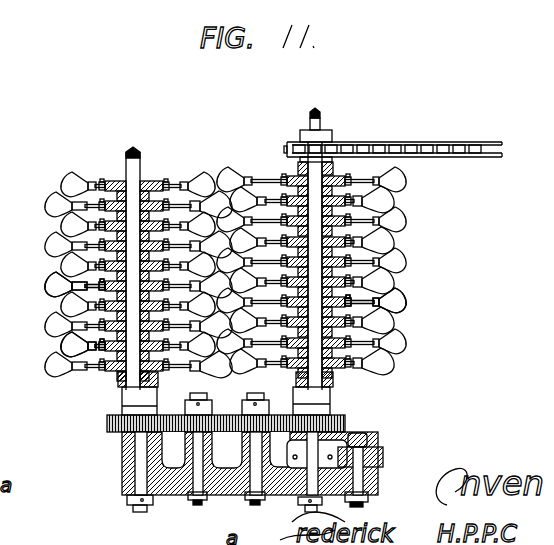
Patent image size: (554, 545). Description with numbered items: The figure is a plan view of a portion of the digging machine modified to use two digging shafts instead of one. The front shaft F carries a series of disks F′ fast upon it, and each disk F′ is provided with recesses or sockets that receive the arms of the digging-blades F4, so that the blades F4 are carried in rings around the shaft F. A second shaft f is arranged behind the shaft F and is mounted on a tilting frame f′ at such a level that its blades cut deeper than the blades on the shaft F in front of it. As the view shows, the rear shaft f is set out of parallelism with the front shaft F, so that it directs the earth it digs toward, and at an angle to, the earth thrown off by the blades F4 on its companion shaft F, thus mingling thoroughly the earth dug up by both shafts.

The second shaft f is at (139, 168).
The shaft F is at (318, 127).
The digging-blade F4 is at (420, 340).
The disk F′ is at (103, 340).
The tilting frame f′ is at (169, 483).